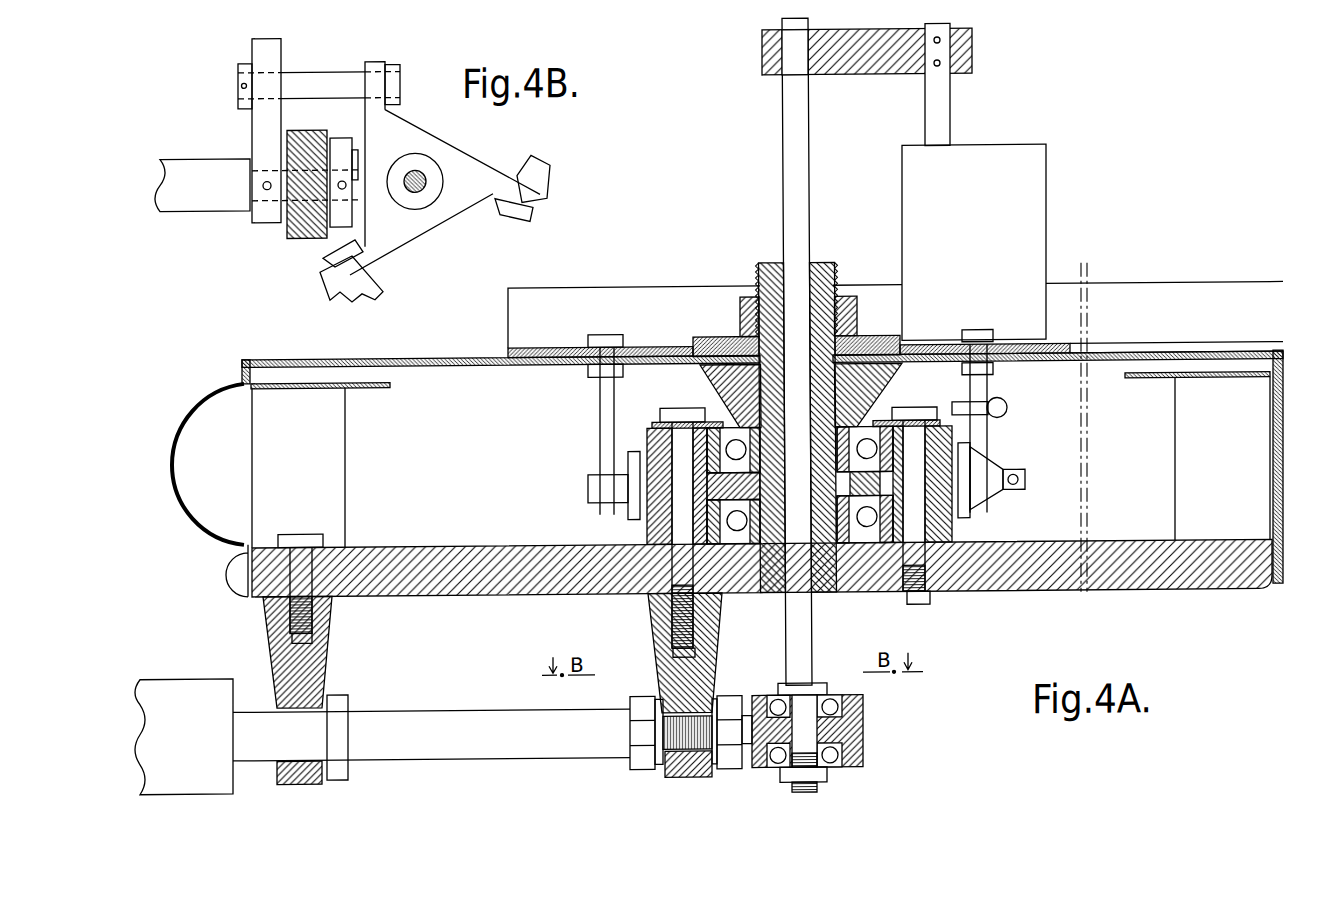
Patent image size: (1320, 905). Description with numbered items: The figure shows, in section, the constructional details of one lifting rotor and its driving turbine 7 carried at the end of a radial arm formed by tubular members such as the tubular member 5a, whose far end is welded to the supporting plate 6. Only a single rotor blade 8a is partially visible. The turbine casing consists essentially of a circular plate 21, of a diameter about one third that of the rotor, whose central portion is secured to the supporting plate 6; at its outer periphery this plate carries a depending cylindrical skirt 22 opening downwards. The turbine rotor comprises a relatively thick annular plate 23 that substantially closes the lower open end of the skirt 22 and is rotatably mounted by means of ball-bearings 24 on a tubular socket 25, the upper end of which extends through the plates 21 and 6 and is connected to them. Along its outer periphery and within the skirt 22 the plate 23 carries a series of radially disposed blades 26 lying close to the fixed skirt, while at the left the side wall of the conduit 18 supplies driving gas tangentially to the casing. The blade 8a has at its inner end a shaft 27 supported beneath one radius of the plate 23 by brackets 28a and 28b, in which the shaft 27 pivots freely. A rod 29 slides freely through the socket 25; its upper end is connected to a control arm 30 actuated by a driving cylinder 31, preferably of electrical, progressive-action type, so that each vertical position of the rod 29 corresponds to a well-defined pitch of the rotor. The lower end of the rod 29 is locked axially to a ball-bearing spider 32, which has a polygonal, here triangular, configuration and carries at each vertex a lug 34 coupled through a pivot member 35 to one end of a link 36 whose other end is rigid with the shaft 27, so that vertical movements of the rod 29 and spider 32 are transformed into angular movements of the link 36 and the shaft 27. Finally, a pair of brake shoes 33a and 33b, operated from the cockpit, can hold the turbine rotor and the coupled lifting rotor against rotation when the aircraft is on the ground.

In FIG. 4A, the tubular member 5a is at (1120, 297).
In FIG. 4A, the supporting plate 6 is at (670, 347).
In FIG. 4A, the turbine 7 is at (1074, 600).
In FIG. 4A, the rotor blade 8a is at (168, 688).
In FIG. 4A, the conduit side wall 18 is at (213, 384).
In FIG. 4A, the circular plate 21 is at (445, 357).
In FIG. 4A, the cylindrical skirt 22 is at (1278, 436).
In FIG. 4A, the annular plate 23 is at (1153, 583).
In FIG. 4A, the ball-bearings 24 is at (736, 455).
In FIG. 4A, the tubular socket 25 is at (772, 594).
In FIG. 4A, the blades 26 is at (333, 447).
In FIG. 4A, the shaft 27 is at (473, 750).
In FIG. 4B, the shaft 27 is at (193, 203).
In FIG. 4A, the bracket 28a is at (322, 644).
In FIG. 4A, the bracket 28b is at (658, 641).
In FIG. 4B, the bracket 28b is at (302, 240).
In FIG. 4A, the rod 29 is at (806, 157).
In FIG. 4B, the rod 29 is at (420, 190).
In FIG. 4A, the control arm 30 is at (850, 70).
In FIG. 4A, the driving cylinder 31 is at (1046, 165).
In FIG. 4A, the ball-bearing spider 32 is at (863, 726).
In FIG. 4B, the ball-bearing spider 32 is at (475, 167).
In FIG. 4A, the brake shoe 33a is at (635, 462).
In FIG. 4A, the brake shoe 33b is at (973, 470).
In FIG. 4B, the lug 34 is at (380, 62).
In FIG. 4B, the pivot member 35 is at (314, 80).
In FIG. 4B, the link 36 is at (258, 128).